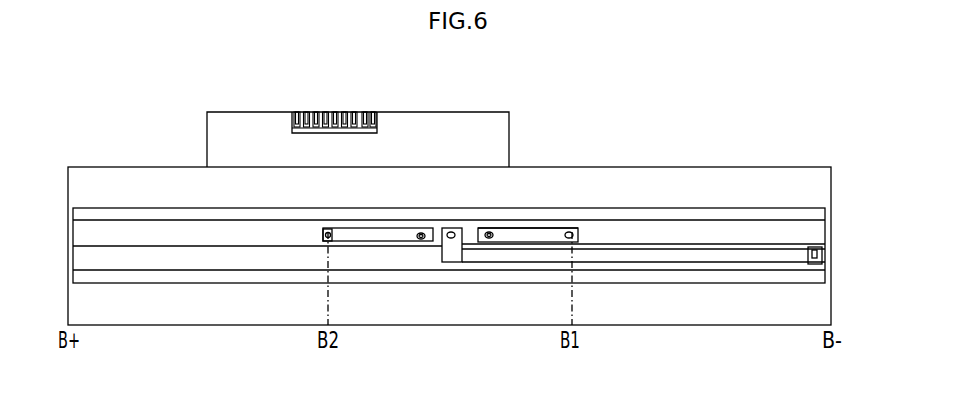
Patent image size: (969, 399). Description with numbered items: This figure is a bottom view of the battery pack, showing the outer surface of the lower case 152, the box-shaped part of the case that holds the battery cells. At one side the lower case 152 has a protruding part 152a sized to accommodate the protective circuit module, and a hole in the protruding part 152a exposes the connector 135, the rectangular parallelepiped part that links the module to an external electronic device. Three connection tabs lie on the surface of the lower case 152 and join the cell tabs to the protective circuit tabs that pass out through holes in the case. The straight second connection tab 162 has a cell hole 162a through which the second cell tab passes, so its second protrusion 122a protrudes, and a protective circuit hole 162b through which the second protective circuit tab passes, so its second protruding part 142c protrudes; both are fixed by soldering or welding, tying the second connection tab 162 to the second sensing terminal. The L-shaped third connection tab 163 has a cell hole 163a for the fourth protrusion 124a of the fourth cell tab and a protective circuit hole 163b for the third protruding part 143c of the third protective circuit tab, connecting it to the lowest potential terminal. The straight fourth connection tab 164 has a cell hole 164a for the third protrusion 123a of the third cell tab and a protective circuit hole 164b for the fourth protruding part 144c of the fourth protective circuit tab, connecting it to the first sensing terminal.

The lower case 152 is at (92, 172).
The protruding part 152a is at (250, 120).
The connector 135 is at (335, 112).
The fourth protruding part 144c is at (488, 233).
The protective circuit hole 164b is at (490, 233).
The fourth connection tab 164 is at (530, 232).
The third protrusion 123a is at (556, 229).
The cell hole 164a is at (569, 233).
The second protrusion 122a is at (323, 233).
The cell hole 162a is at (327, 240).
The second connection tab 162 is at (368, 243).
The protective circuit hole 162b is at (419, 240).
The second protruding part 142c is at (423, 240).
The third protruding part 143c is at (455, 240).
The protective circuit hole 163b is at (460, 242).
The third connection tab 163 is at (632, 256).
The cell hole 163a is at (810, 250).
The fourth protrusion 124a is at (813, 258).